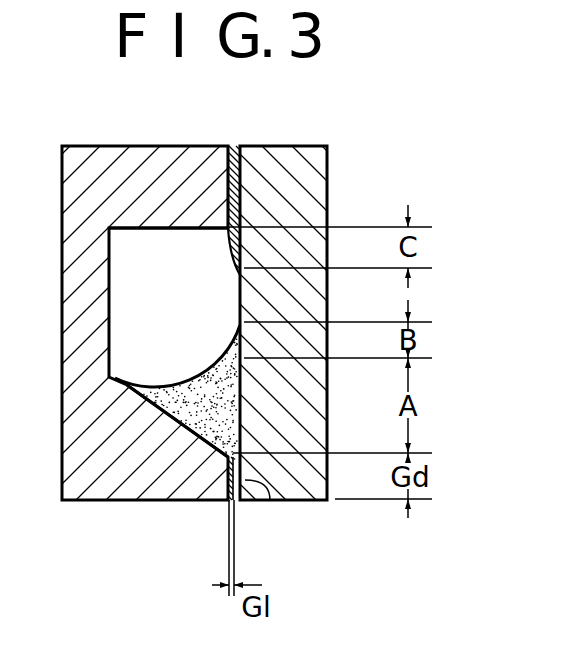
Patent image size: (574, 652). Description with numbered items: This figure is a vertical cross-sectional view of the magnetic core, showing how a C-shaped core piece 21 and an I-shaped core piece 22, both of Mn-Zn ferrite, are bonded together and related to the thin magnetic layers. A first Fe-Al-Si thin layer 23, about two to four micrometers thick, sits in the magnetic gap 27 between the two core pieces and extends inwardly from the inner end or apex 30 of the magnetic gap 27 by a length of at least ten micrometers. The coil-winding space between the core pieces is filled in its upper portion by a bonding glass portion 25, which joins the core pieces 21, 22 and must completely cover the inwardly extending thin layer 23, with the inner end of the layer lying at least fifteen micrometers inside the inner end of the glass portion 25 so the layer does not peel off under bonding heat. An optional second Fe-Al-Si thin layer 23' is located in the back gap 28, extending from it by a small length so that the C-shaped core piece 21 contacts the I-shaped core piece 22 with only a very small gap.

The C-shaped core piece 21 is at (113, 155).
The I-shaped core piece 22 is at (318, 160).
The first Fe-Al-Si thin layer 23 is at (270, 515).
The second Fe-Al-Si thin layer 23' is at (168, 241).
The bonding glass portion 25 is at (176, 395).
The magnetic gap 27 is at (226, 502).
The back gap 28 is at (238, 168).
The inner end (apex) of the magnetic gap 30 is at (227, 458).